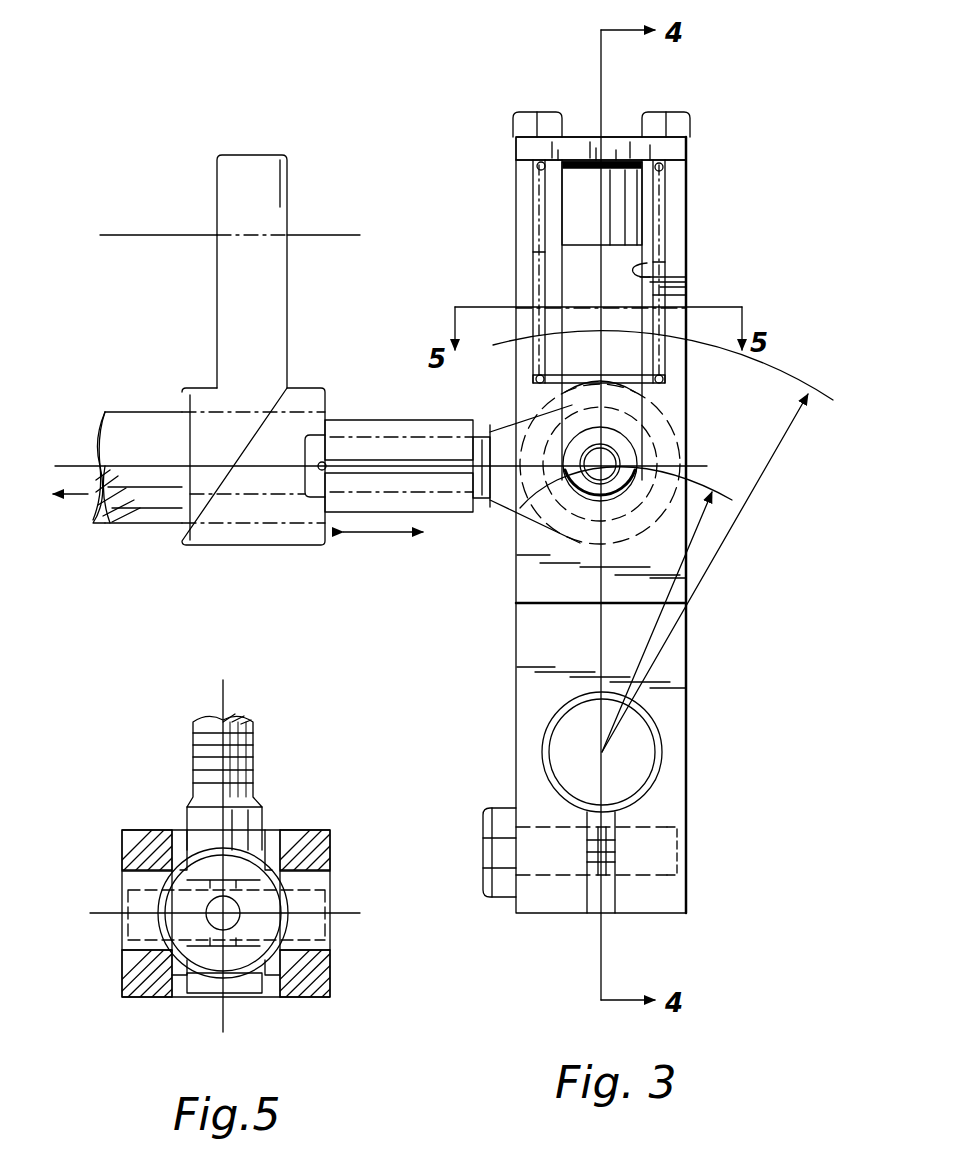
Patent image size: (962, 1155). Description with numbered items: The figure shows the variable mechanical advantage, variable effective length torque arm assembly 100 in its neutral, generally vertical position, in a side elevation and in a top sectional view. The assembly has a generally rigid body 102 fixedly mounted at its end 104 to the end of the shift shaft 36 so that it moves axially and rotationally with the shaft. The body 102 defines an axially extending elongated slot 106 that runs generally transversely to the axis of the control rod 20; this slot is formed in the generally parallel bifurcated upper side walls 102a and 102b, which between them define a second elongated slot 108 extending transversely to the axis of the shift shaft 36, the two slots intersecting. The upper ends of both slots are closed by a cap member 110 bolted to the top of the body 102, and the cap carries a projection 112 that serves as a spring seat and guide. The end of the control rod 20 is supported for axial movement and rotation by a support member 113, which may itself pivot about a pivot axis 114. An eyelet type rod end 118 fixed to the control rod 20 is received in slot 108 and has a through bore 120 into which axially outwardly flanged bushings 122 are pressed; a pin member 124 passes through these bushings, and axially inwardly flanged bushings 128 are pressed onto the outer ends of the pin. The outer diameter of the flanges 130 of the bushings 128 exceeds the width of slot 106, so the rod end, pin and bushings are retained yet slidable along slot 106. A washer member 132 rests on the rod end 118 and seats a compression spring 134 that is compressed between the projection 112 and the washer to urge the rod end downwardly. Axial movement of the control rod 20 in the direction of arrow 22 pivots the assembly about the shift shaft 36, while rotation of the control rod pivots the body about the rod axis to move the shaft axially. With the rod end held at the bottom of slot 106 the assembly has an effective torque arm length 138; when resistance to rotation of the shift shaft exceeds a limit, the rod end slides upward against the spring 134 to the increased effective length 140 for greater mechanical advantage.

In FIG. 3, the control rod 20 is at (340, 420).
In FIG. 5, the control rod 20 is at (255, 745).
In FIG. 3, the arrow 22 is at (392, 534).
In FIG. 3, the shift shaft 36 is at (568, 732).
In FIG. 5, the torque arm assembly 100 is at (155, 780).
In FIG. 3, the rigid body 102 is at (672, 413).
In FIG. 5, the upper side wall 102a is at (308, 990).
In FIG. 3, the upper side wall 102b is at (670, 302).
In FIG. 5, the upper side wall 102b is at (152, 988).
In FIG. 3, the end 104 is at (706, 761).
In FIG. 3, the elongated slot 106 is at (647, 277).
In FIG. 5, the elongated slot 106 is at (306, 875).
In FIG. 5, the second elongated slot 108 is at (277, 830).
In FIG. 3, the cap member 110 is at (613, 147).
In FIG. 3, the projection 112 is at (601, 320).
In FIG. 3, the support member 113 is at (275, 311).
In FIG. 3, the pivot axis 114 is at (143, 233).
In FIG. 3, the rod end 118 is at (507, 502).
In FIG. 5, the rod end 118 is at (250, 987).
In FIG. 5, the through bore 120 is at (263, 847).
In FIG. 5, the bushings 122 is at (205, 883).
In FIG. 3, the pin member 124 is at (615, 455).
In FIG. 5, the pin member 124 is at (308, 905).
In FIG. 5, the bushings 128 is at (277, 965).
In FIG. 3, the flanges 130 is at (562, 410).
In FIG. 3, the washer member 132 is at (663, 387).
In FIG. 3, the compression spring 134 is at (667, 247).
In FIG. 3, the effective torque arm length 138 is at (643, 656).
In FIG. 3, the effective length 140 is at (700, 578).